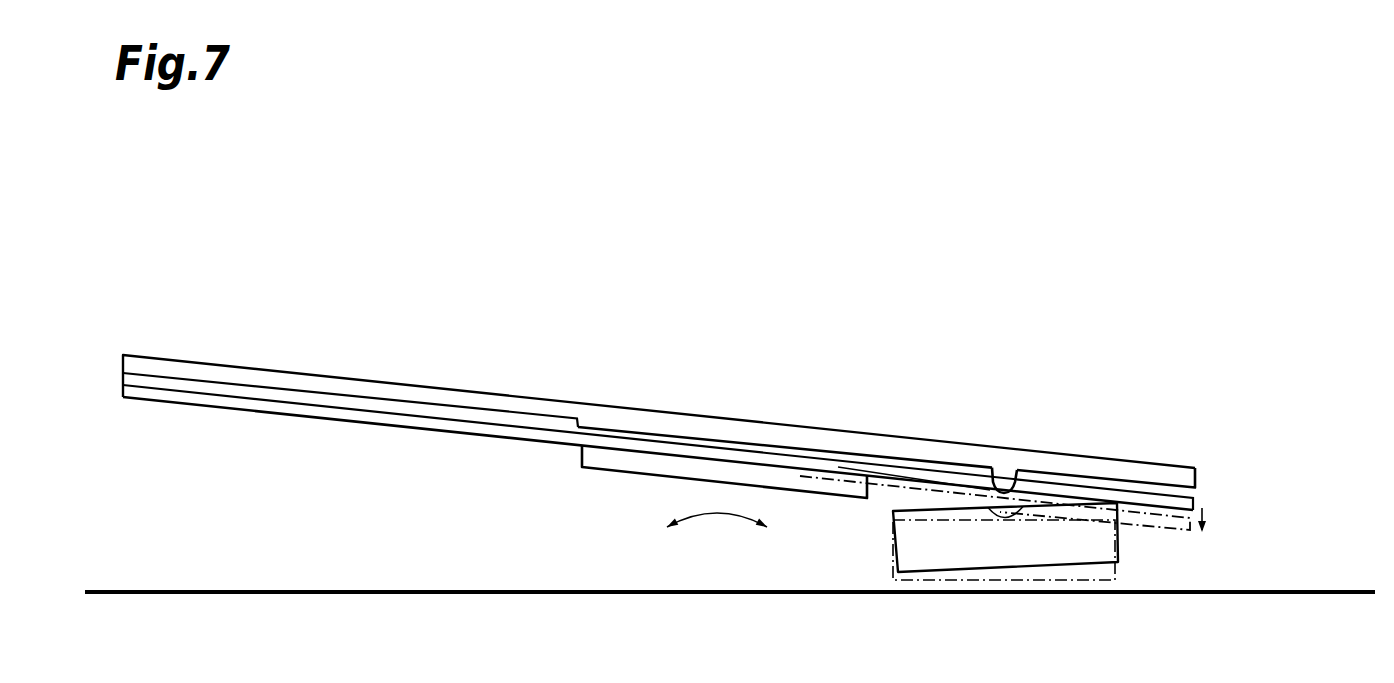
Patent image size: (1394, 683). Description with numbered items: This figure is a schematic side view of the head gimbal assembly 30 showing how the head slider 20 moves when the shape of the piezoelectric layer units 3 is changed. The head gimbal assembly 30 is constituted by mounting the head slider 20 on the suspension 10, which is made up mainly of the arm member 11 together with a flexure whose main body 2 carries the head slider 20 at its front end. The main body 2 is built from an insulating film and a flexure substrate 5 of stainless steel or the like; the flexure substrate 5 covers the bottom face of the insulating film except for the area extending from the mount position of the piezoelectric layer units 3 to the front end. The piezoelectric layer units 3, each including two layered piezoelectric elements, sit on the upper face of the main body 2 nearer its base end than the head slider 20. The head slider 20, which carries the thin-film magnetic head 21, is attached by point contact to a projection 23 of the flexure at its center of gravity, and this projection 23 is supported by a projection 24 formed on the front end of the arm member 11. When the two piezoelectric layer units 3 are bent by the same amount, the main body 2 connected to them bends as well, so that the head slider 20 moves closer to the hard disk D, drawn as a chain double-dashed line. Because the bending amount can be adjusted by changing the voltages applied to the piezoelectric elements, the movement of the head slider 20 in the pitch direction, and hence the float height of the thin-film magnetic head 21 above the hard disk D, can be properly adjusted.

The suspension 10 is at (118, 352).
The arm member 11 is at (327, 383).
The flexure substrate 5 is at (188, 387).
The main body 2 is at (258, 418).
The head gimbal assembly 30 is at (772, 338).
The projection 23 is at (993, 465).
The projection 24 is at (1005, 488).
The piezoelectric layer unit 3 is at (620, 458).
The head slider 20 is at (922, 548).
The thin-film magnetic head 21 is at (1092, 578).
The hard disk D is at (1290, 588).